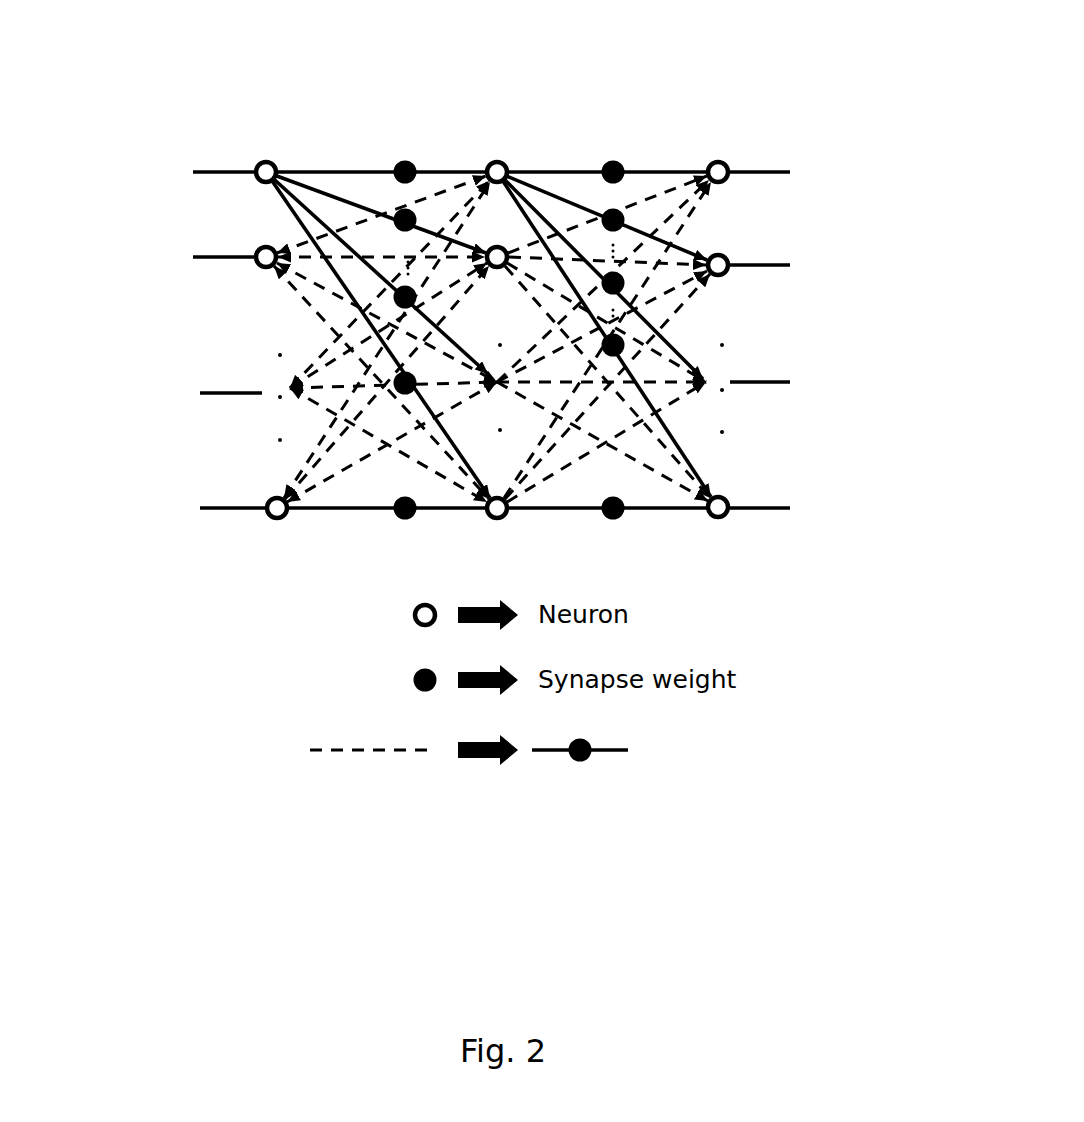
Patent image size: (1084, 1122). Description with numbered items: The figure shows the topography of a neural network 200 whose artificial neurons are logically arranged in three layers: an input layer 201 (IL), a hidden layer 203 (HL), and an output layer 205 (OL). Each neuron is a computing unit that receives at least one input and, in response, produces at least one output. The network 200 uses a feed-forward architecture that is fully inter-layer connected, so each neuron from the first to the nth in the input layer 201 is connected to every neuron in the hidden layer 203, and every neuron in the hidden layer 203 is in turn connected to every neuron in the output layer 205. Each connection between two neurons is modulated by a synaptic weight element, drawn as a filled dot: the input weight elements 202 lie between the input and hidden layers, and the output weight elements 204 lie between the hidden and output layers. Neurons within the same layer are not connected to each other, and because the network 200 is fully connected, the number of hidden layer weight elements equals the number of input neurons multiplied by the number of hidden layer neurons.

The neural network 200 is at (372, 128).
The input layer 201 is at (262, 568).
The synaptic weight element 202 is at (398, 523).
The hidden layer 203 is at (505, 144).
The synaptic weight element 204 is at (620, 518).
The output layer 205 is at (738, 525).